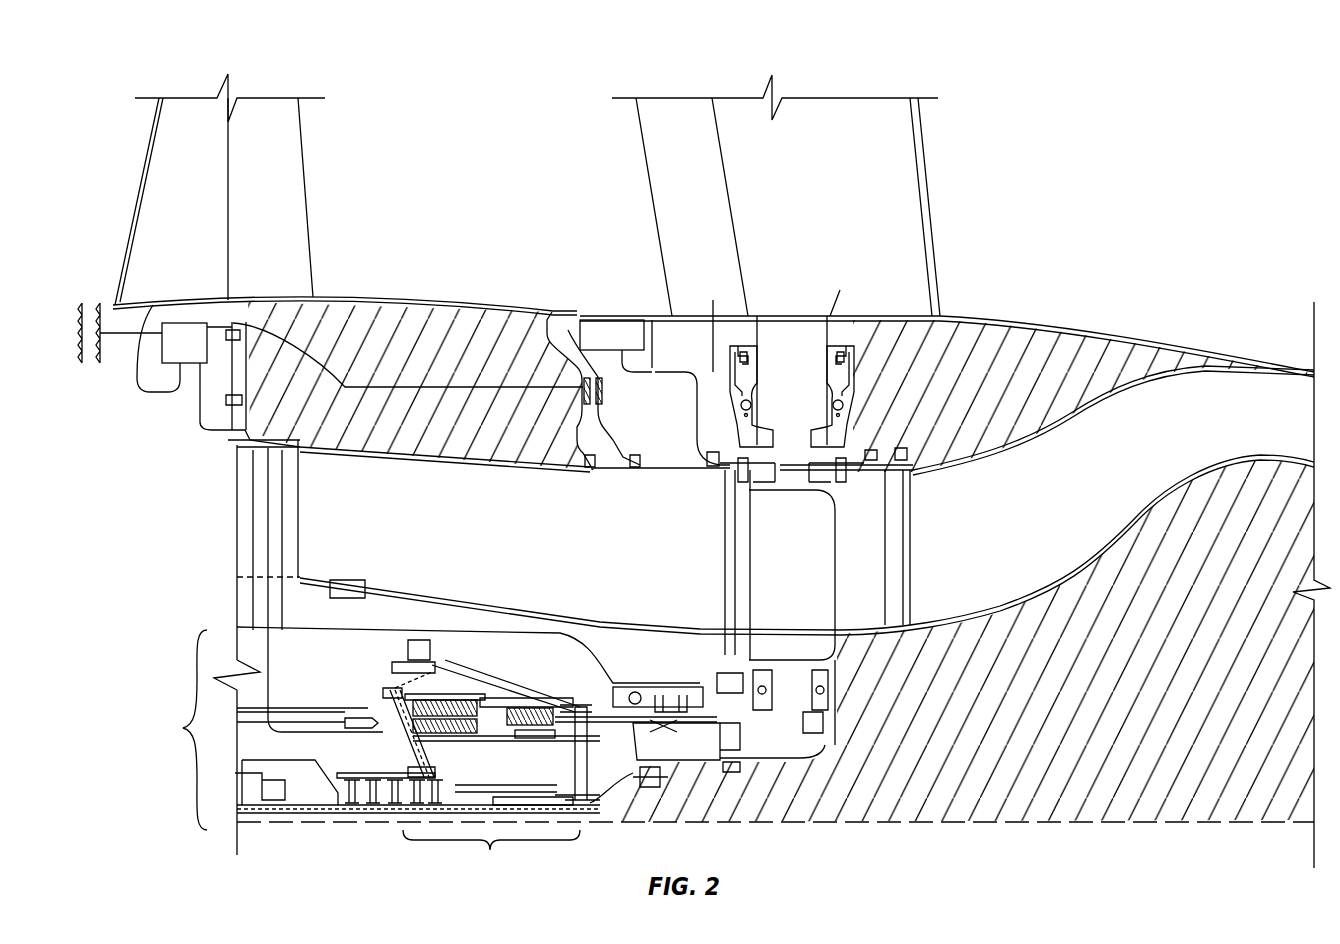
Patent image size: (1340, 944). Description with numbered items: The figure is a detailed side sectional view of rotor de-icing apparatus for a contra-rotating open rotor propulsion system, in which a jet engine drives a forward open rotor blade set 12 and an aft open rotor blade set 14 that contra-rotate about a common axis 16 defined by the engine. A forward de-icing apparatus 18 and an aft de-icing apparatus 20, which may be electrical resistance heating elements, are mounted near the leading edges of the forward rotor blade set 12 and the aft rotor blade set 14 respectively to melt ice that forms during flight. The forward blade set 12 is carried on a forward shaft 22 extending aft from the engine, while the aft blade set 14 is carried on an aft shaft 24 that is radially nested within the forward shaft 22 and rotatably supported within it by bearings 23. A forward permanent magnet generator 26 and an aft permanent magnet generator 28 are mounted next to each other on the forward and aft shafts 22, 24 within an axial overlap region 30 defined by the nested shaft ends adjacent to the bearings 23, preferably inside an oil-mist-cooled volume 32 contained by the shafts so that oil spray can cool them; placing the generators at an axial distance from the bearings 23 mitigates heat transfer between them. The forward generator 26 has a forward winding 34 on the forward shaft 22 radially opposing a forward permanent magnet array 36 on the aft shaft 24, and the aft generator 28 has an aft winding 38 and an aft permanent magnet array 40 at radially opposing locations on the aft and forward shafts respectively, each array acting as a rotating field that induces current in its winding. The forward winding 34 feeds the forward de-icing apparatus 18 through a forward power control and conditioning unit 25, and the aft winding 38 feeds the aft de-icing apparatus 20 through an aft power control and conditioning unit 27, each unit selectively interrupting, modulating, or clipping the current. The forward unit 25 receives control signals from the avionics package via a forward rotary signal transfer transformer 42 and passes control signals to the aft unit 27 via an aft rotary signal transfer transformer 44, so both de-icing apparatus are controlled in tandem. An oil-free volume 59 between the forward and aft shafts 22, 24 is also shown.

The forward open rotor blade set 12 is at (270, 70).
The aft open rotor blade set 14 is at (833, 70).
The common axis 16 is at (1245, 822).
The forward de-icing apparatus 18 is at (205, 201).
The aft de-icing apparatus 20 is at (705, 233).
The forward shaft 22 is at (483, 453).
The bearings 23 is at (652, 695).
The aft shaft 24 is at (1065, 413).
The forward power control and conditioning unit 25 is at (199, 354).
The forward permanent magnet generator 26 is at (442, 742).
The aft power control and conditioning unit 27 is at (607, 335).
The aft permanent magnet generator 28 is at (538, 745).
The axial overlap region 30 is at (417, 794).
The oil-mist-cooled volume 32 is at (266, 647).
The forward winding 34 is at (420, 745).
The forward permanent magnet array 36 is at (443, 713).
The aft winding 38 is at (528, 727).
The aft permanent magnet array 40 is at (543, 733).
The forward rotary signal transfer transformer 42 is at (87, 376).
The aft rotary signal transfer transformer 44 is at (572, 410).
The oil-free volume 59 is at (425, 626).